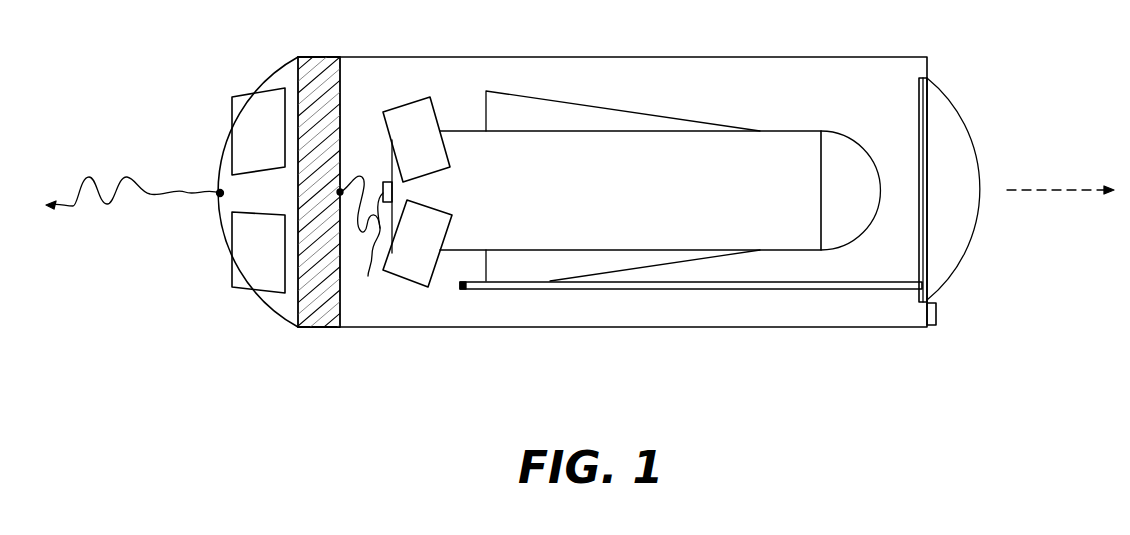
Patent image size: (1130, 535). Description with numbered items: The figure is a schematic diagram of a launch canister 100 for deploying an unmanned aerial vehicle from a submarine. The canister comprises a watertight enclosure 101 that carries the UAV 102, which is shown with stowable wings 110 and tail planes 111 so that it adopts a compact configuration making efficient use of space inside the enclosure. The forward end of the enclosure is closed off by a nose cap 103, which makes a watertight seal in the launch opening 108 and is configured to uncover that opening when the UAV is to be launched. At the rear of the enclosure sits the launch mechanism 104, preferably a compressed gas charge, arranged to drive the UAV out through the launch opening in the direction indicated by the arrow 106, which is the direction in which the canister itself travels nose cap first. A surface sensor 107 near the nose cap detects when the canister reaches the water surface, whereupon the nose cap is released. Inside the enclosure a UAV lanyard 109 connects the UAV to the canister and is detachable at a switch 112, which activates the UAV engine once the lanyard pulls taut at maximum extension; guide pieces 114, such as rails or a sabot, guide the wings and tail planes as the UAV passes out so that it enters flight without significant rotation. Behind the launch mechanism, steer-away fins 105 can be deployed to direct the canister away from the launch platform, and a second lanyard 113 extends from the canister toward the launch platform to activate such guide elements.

The launch canister 100 is at (587, 362).
The watertight enclosure 101 is at (806, 82).
The unmanned aerial vehicle 102 is at (647, 202).
The nose cap 103 is at (963, 228).
The launch mechanism 104 is at (321, 63).
The steer-away fins 105 is at (233, 113).
The arrow indicating launch direction 106 is at (1078, 186).
The surface sensor 107 is at (936, 312).
The launch opening 108 is at (922, 115).
The UAV lanyard 109 is at (362, 237).
The stowable wings 110 is at (510, 95).
The tail planes 111 is at (410, 112).
The switch 112 is at (392, 192).
The second lanyard 113 is at (87, 177).
The guide pieces 114 is at (730, 289).